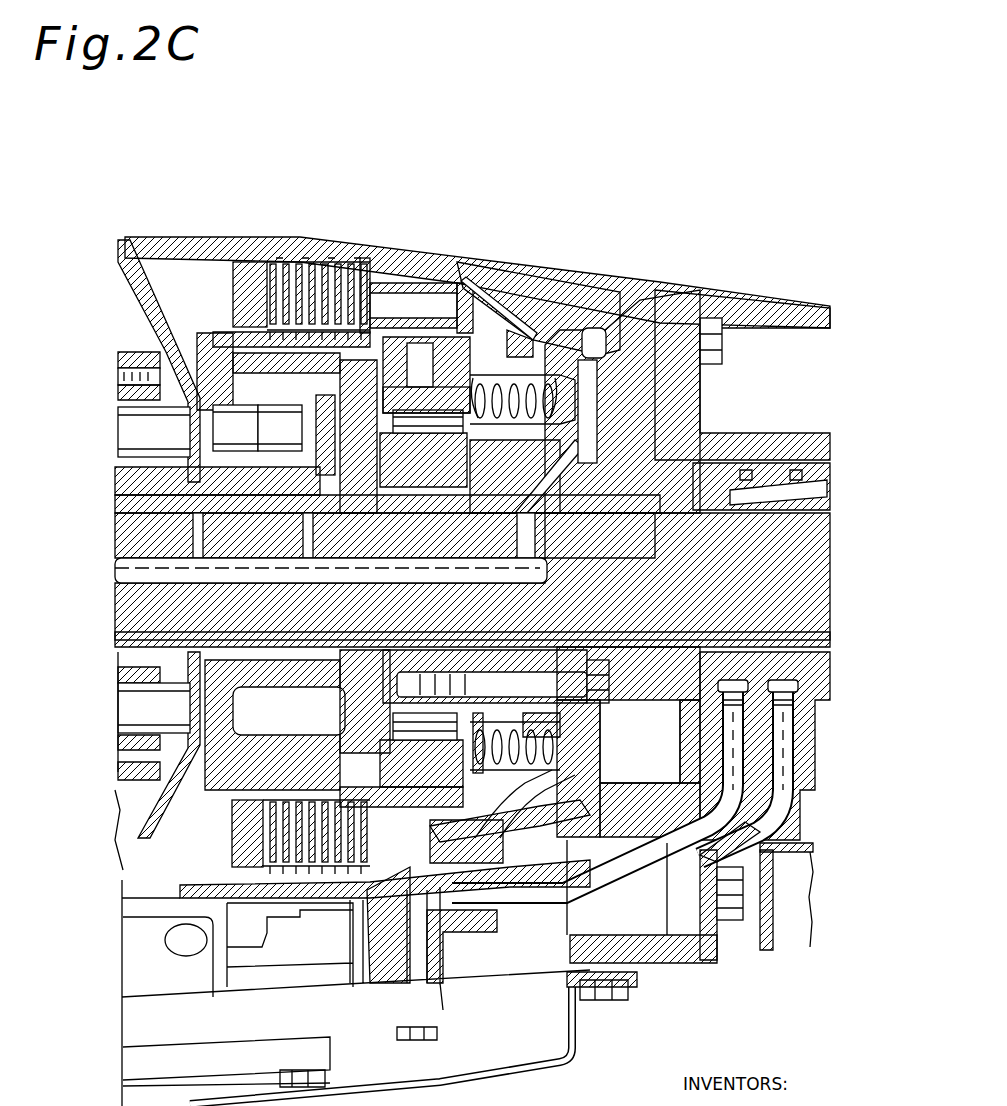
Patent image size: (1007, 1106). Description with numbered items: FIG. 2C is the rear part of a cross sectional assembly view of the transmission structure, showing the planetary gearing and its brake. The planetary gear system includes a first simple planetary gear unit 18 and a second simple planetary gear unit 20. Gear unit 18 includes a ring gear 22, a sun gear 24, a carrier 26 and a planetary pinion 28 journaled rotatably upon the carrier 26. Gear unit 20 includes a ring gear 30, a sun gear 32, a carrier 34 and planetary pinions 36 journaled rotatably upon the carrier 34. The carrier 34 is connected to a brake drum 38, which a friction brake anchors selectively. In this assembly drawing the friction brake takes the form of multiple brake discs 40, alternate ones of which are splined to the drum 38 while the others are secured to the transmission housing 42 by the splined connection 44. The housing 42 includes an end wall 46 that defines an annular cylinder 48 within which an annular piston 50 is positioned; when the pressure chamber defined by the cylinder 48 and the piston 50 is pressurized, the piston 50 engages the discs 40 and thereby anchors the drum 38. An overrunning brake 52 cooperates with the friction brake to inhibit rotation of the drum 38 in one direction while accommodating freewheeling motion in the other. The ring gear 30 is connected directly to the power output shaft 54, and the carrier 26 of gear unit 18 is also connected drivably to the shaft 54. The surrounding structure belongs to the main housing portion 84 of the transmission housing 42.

The first simple planetary gear unit 18 is at (143, 348).
The second simple planetary gear unit 20 is at (230, 345).
The ring gear 22 is at (120, 358).
The sun gear 24 is at (117, 500).
The carrier 26 is at (128, 440).
The planetary pinion 28 is at (118, 392).
The ring gear 30 is at (118, 374).
The sun gear 32 is at (280, 428).
The carrier 34 is at (213, 702).
The planetary pinions 36 is at (235, 428).
The brake drum 38 is at (500, 370).
The brake discs 40 is at (355, 262).
The transmission housing 42 is at (316, 240).
The splined connection 44 is at (370, 262).
The end wall 46 is at (585, 352).
The annular cylinder 48 is at (503, 307).
The annular piston 50 is at (413, 287).
The overrunning brake 52 is at (430, 413).
The power output shaft 54 is at (118, 530).
The main housing portion 84 is at (246, 214).